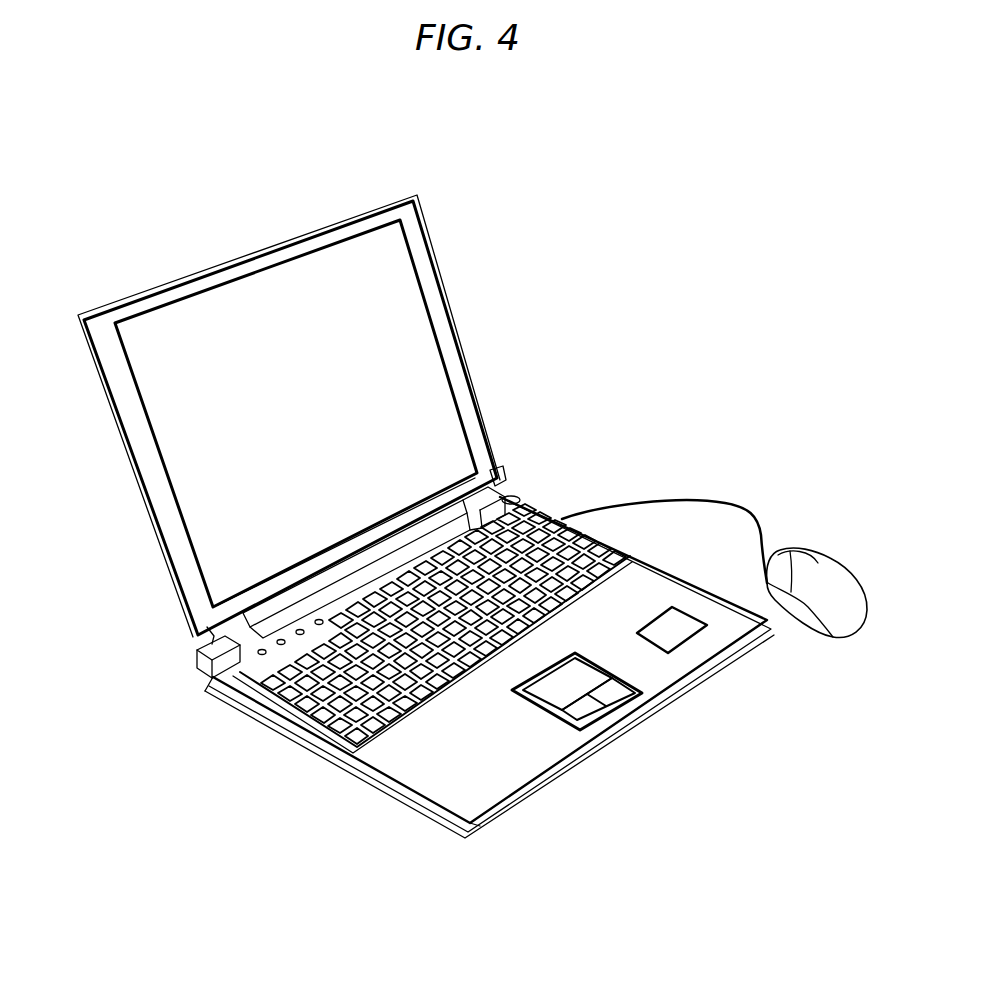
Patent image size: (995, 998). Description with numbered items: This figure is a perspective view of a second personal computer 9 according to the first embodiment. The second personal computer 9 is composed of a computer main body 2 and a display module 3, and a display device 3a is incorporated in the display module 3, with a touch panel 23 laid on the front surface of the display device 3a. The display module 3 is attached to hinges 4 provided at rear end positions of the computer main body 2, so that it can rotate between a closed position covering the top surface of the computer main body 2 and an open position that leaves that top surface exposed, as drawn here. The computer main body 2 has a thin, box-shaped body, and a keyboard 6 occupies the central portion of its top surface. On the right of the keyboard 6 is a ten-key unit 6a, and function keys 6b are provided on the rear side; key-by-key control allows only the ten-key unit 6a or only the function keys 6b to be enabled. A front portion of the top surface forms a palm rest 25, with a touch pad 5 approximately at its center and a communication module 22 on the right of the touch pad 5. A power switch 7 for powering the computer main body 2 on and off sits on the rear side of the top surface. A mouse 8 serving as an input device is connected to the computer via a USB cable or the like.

The second personal computer 9 is at (706, 207).
The computer main body 2 is at (271, 761).
The display module 3 is at (483, 297).
The display device 3a is at (297, 285).
The touch panel 23 is at (190, 345).
The hinges 4 is at (190, 635).
The power switch 7 is at (466, 534).
The keyboard 6 is at (320, 710).
The ten-key unit 6a is at (548, 528).
The function keys 6b is at (213, 687).
The touch pad 5 is at (562, 685).
The communication module 22 is at (676, 633).
The palm rest 25 is at (483, 757).
The mouse 8 is at (795, 548).